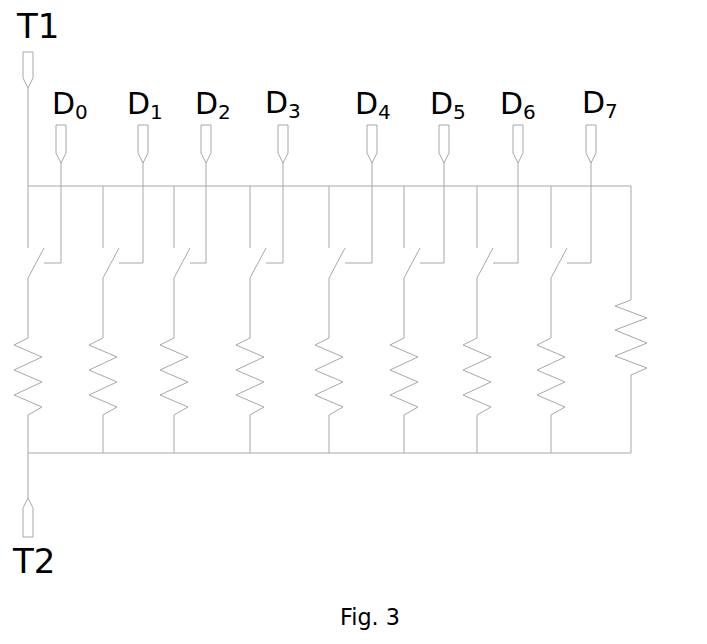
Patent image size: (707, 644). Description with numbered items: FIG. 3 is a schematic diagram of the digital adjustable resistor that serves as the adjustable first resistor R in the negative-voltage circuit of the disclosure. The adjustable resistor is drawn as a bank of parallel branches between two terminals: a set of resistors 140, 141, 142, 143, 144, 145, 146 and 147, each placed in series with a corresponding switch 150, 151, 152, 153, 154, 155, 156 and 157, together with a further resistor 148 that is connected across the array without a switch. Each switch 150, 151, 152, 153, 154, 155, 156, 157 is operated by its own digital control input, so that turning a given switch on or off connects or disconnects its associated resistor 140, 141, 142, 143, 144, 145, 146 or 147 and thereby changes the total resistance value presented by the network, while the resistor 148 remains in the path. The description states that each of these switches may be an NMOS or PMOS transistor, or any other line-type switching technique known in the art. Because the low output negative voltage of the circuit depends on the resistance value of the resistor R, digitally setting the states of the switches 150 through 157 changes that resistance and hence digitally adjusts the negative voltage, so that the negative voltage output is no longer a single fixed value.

The resistor 140 is at (52, 395).
The resistor 141 is at (130, 395).
The resistor 142 is at (206, 395).
The resistor 143 is at (282, 395).
The resistor 144 is at (355, 395).
The resistor 145 is at (430, 395).
The resistor 146 is at (509, 395).
The resistor 147 is at (583, 395).
The fixed resistor 148 is at (662, 340).
The switch 150 is at (45, 273).
The switch 151 is at (120, 273).
The switch 152 is at (191, 273).
The switch 153 is at (267, 273).
The switch 154 is at (346, 273).
The switch 155 is at (421, 273).
The switch 156 is at (494, 273).
The switch 157 is at (568, 273).